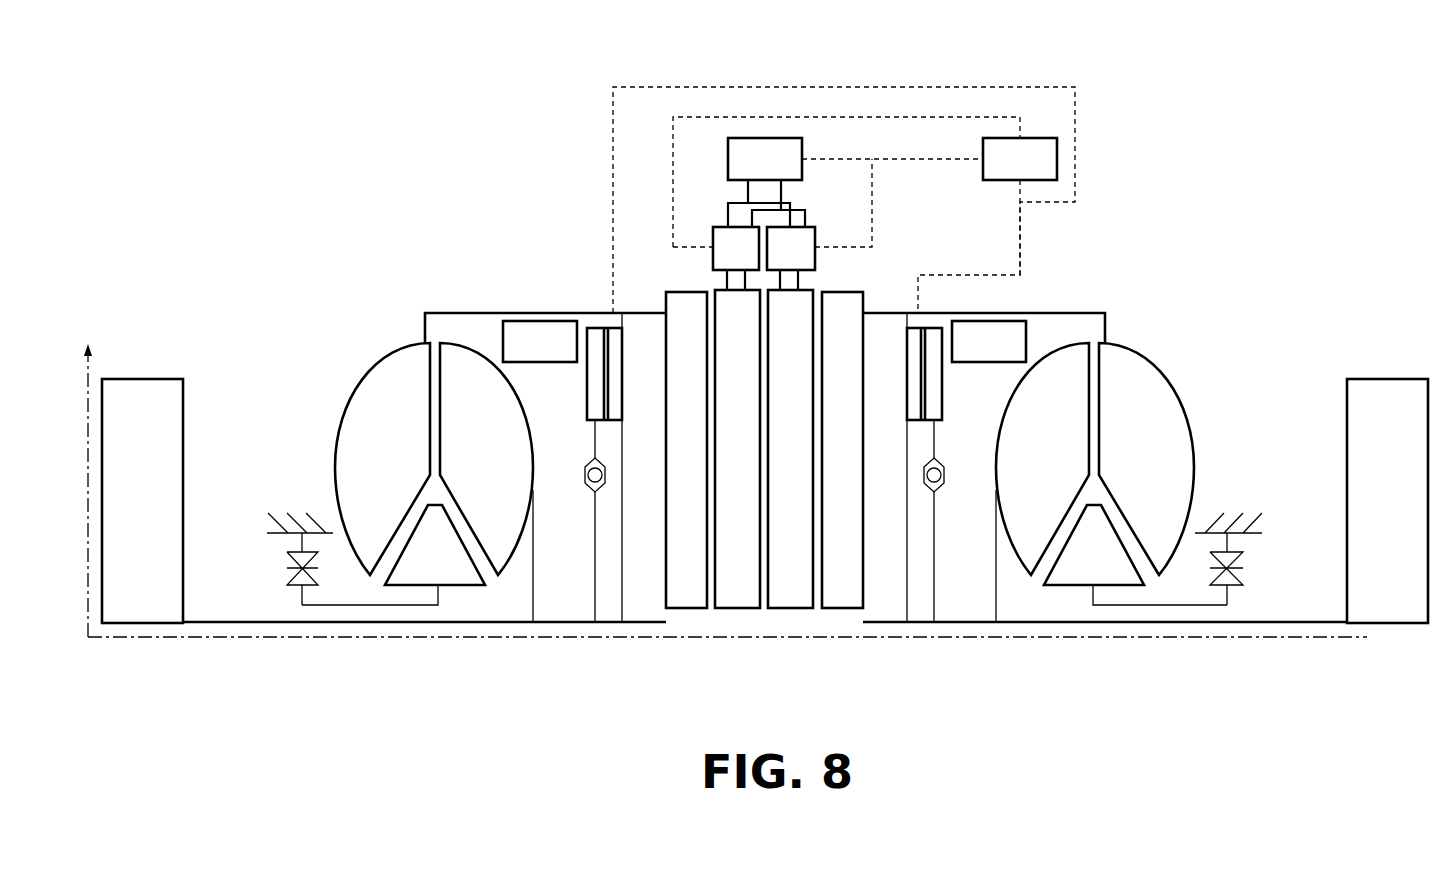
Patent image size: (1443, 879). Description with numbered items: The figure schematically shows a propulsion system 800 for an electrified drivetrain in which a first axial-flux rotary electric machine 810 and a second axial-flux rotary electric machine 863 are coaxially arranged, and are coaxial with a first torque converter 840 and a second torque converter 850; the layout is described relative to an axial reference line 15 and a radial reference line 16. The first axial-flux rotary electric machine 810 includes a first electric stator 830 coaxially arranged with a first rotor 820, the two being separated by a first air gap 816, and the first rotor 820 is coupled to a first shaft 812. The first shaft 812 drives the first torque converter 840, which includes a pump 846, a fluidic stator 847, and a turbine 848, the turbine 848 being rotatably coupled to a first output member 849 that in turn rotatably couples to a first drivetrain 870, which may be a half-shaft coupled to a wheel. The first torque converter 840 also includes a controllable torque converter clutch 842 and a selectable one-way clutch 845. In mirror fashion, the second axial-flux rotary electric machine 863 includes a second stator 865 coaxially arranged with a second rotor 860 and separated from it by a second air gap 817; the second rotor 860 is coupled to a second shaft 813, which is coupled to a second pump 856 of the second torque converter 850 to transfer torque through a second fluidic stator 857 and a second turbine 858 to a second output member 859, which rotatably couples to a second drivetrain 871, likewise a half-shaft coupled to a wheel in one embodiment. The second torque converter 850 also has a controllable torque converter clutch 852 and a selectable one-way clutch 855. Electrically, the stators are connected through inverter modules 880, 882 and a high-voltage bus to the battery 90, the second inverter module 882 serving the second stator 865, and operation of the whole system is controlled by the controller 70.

The propulsion system 800 is at (321, 77).
The first axial-flux rotary electric machine 810 is at (674, 508).
The first shaft 812 is at (473, 313).
The second shaft 813 is at (1060, 313).
The first air gap 816 is at (709, 612).
The second air gap 817 is at (819, 612).
The first rotor 820 is at (680, 608).
The first electric stator 830 is at (748, 609).
The first torque converter 840 is at (402, 465).
The controllable torque converter clutch 842 is at (587, 410).
The selectable one-way clutch 845 is at (287, 570).
The pump 846 is at (467, 461).
The fluidic stator 847 is at (413, 571).
The turbine 848 is at (363, 461).
The first output member 849 is at (247, 623).
The second torque converter 850 is at (1121, 465).
The controllable torque converter clutch 852 is at (942, 410).
The selectable one-way clutch 855 is at (1243, 570).
The second pump 856 is at (1127, 461).
The second fluidic stator 857 is at (1073, 571).
The second turbine 858 is at (1023, 461).
The second output member 859 is at (1252, 623).
The second rotor 860 is at (853, 608).
The second axial-flux rotary electric machine 863 is at (858, 508).
The second electric stator 865 is at (781, 609).
The first drivetrain 870 is at (124, 513).
The second drivetrain 871 is at (1368, 513).
The first power converter 880 is at (719, 261).
The second inverter module 882 is at (774, 261).
The battery 90 is at (752, 172).
The controller 70 is at (1007, 172).
The axial reference line 15 is at (1119, 638).
The radial reference line 16 is at (88, 557).